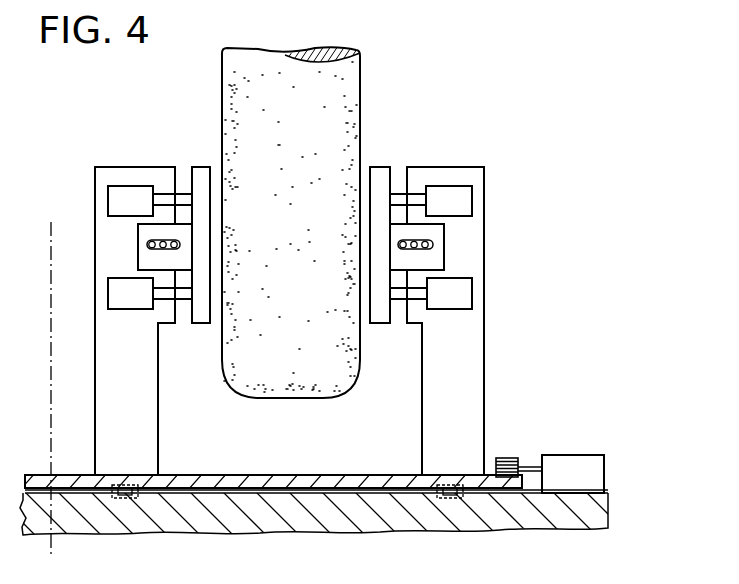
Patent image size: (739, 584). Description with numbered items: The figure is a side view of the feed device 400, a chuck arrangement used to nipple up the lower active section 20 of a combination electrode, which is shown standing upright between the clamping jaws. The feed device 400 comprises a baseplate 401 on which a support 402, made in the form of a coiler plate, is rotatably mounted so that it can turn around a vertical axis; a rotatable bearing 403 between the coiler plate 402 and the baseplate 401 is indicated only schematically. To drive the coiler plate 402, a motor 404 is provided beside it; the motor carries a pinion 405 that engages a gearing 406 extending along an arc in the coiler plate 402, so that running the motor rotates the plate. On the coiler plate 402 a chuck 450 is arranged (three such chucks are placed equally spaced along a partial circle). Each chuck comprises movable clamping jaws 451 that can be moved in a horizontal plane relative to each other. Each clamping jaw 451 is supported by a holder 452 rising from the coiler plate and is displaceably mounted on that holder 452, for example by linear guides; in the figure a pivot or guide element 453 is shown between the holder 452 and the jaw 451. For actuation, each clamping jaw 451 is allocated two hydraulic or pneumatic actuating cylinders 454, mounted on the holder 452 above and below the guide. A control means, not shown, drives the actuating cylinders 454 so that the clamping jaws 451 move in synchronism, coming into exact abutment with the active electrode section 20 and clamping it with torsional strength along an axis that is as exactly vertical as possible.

The lower active section 20 is at (221, 98).
The feed device 400 is at (440, 88).
The baseplate 401 is at (592, 520).
The support (coiler plate) 402 is at (277, 475).
The rotatable bearing 403 is at (128, 498).
The motor 404 is at (568, 462).
The pinion 405 is at (507, 457).
The gearing 406 is at (490, 470).
The chuck 450 is at (489, 222).
The clamping jaw 451 is at (200, 172).
The holder 452 is at (112, 403).
The pivot hinge 453 is at (147, 246).
The actuating cylinder 454 is at (117, 198).